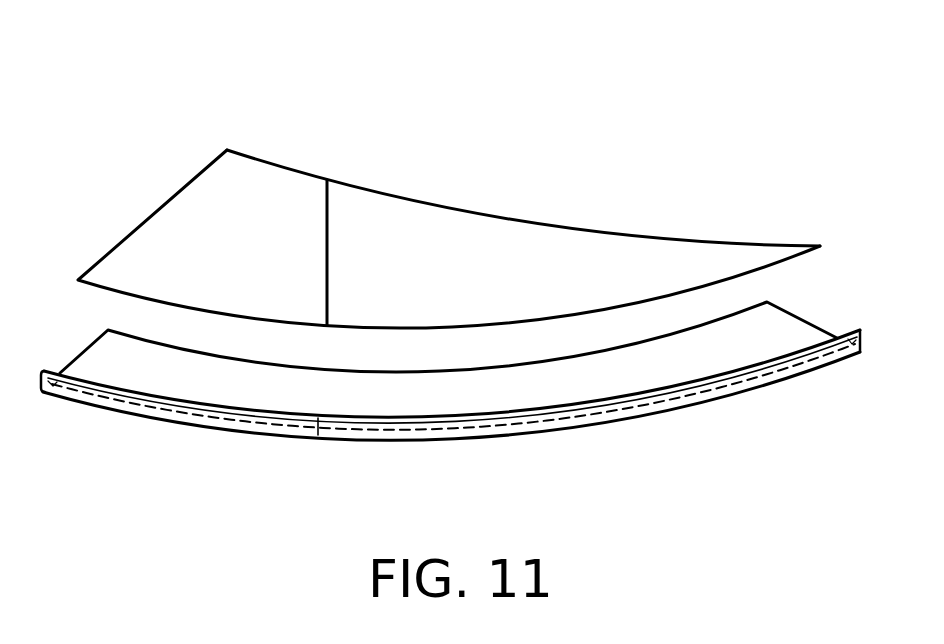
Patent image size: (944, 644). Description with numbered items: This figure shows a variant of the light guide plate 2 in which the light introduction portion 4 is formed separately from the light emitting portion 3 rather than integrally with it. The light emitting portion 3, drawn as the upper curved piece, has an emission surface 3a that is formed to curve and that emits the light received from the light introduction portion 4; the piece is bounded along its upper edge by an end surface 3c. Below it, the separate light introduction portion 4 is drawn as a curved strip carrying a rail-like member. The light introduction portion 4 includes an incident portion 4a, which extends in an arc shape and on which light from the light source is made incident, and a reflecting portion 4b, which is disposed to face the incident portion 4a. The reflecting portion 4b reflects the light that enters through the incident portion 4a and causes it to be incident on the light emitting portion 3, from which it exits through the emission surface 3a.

The light guide plate 2 is at (182, 53).
The light emitting portion 3 is at (180, 183).
The emission surface 3a is at (440, 277).
The end surface 3c is at (548, 225).
The light introduction portion 4 is at (90, 340).
The incident portion 4a is at (613, 349).
The reflecting portion 4b is at (195, 412).